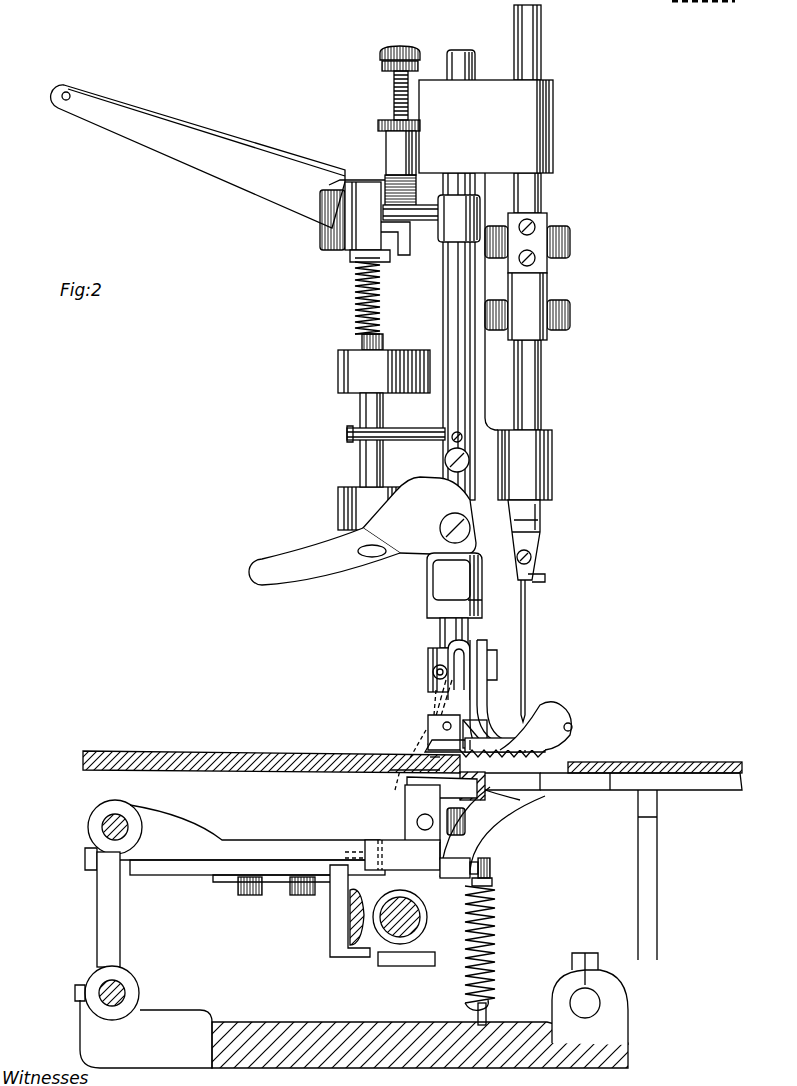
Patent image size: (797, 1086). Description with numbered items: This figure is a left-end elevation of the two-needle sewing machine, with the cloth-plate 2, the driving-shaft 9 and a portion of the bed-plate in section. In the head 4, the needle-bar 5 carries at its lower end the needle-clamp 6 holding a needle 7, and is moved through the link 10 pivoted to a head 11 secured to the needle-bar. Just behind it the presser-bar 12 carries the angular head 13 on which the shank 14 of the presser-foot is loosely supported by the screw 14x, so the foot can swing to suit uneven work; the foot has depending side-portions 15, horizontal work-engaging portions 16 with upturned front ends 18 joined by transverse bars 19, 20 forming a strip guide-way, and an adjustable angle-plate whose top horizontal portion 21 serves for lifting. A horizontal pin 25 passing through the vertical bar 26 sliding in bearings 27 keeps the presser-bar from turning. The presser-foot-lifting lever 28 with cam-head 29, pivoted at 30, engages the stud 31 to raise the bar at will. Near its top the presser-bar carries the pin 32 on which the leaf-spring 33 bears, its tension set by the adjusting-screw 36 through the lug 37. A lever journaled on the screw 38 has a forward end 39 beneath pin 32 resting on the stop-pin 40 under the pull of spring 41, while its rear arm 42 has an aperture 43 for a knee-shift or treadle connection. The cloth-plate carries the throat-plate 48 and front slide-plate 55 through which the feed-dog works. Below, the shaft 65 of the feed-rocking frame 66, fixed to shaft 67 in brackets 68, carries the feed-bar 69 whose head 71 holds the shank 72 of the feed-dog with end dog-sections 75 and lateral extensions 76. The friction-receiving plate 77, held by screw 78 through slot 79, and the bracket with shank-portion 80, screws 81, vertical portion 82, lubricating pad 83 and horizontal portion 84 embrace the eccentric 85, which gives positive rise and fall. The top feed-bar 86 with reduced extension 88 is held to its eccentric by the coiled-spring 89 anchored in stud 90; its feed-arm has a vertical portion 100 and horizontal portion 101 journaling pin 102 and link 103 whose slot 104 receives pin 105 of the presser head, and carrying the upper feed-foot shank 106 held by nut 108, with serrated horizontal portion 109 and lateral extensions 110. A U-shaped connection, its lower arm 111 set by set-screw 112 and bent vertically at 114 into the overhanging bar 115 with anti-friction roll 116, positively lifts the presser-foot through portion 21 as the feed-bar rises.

The cloth-plate 2 is at (188, 766).
The head 4 is at (530, 130).
The needle-bar 5 is at (530, 385).
The needle-clamp 6 is at (545, 546).
The needle 7 is at (527, 626).
The driving-shaft 9 is at (418, 960).
The link 10 is at (540, 290).
The head 11 is at (535, 246).
The presser-bar 12 is at (460, 370).
The angular head 13 is at (440, 655).
The shank of the presser-foot 14 is at (495, 672).
The screw 14x is at (490, 655).
The depending side-portions 15 is at (489, 720).
The horizontal work-engaging portions 16 is at (560, 785).
The upturned portions 18 is at (560, 742).
The transverse bar 19 is at (575, 716).
The transverse bar 20 is at (556, 706).
The top horizontal portion of the adjusting-plate 21 is at (432, 662).
The horizontal pin 25 is at (348, 434).
The vertical bar 26 is at (365, 408).
The bearings 27 is at (345, 368).
The presser-foot-lifting lever 28 is at (266, 564).
The cam-head 29 is at (354, 531).
The pivot 30 is at (442, 532).
The stud or pin 31 is at (453, 472).
The pin or bar 32 is at (405, 210).
The leaf-spring 33 is at (385, 180).
The adjusting-screw 36 is at (394, 95).
The lug 37 is at (395, 152).
The screw or pin 38 is at (320, 226).
The forward end of the lever 39 is at (352, 258).
The stop-pin 40 is at (355, 286).
The spring 41 is at (356, 312).
The rear arm of the lever 42 is at (195, 156).
The aperture 43 is at (62, 102).
The throat-plate 48 is at (495, 780).
The front slide-plate 55 is at (700, 762).
The shaft 65 is at (130, 822).
The feed-rocking frame 66 is at (118, 918).
The shaft 67 is at (132, 990).
The brackets 68 is at (150, 1010).
The feed-bar 69 is at (268, 840).
The head 71 is at (412, 816).
The shank of the feed-dog 72 is at (462, 790).
The end dog-sections 75 is at (520, 790).
The enlarged lateral extension 76 is at (490, 800).
The friction-receiving plate 77 is at (445, 870).
The screw 78 is at (365, 846).
The slot 79 is at (378, 852).
The shank-portion of the bracket 80 is at (280, 883).
The screws 81 is at (244, 896).
The vertical portion of the bracket 82 is at (340, 940).
The sponge or pad 83 is at (355, 930).
The horizontal portion of the bracket 84 is at (400, 966).
The eccentric 85 is at (382, 935).
The top feed-bar 86 is at (490, 895).
The reduced extension 88 is at (495, 868).
The coiled-spring 89 is at (492, 938).
The stud or bracket 90 is at (488, 1014).
The vertical portion of the feed-arm 100 is at (426, 793).
The horizontal portion of the feed-arm 101 is at (386, 773).
The pin 102 is at (440, 732).
The link 103 is at (447, 712).
The longitudinal slot 104 is at (448, 690).
The pin 105 is at (440, 668).
The shank of the upper feed-foot 106 is at (480, 730).
The nut 108 is at (396, 790).
The horizontal portion of the feed-foot 109 is at (533, 715).
The lateral short extensions 110 is at (500, 737).
The lower arm 111 is at (430, 828).
The set-screw 112 is at (466, 825).
The vertical portion 114 is at (388, 733).
The overhanging bar 115 is at (365, 727).
The anti-friction roll 116 is at (432, 680).